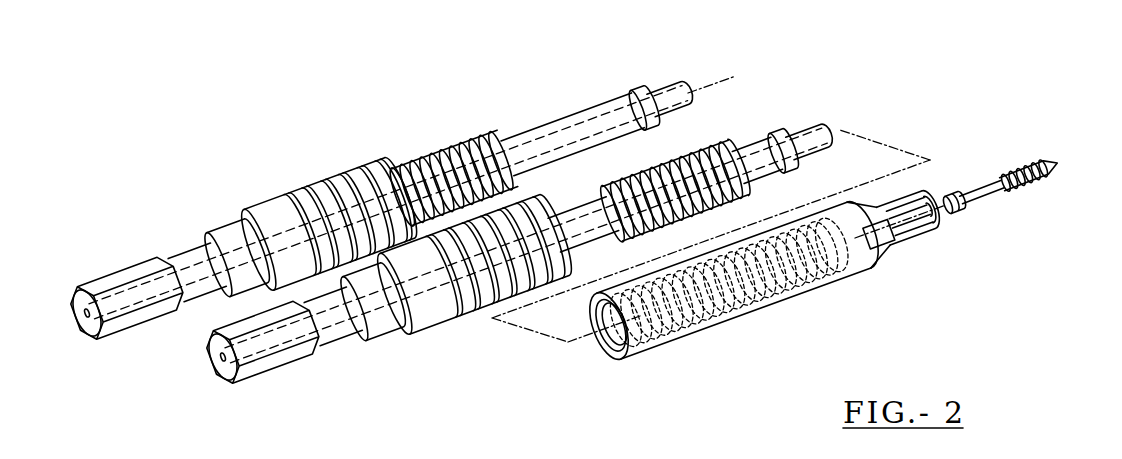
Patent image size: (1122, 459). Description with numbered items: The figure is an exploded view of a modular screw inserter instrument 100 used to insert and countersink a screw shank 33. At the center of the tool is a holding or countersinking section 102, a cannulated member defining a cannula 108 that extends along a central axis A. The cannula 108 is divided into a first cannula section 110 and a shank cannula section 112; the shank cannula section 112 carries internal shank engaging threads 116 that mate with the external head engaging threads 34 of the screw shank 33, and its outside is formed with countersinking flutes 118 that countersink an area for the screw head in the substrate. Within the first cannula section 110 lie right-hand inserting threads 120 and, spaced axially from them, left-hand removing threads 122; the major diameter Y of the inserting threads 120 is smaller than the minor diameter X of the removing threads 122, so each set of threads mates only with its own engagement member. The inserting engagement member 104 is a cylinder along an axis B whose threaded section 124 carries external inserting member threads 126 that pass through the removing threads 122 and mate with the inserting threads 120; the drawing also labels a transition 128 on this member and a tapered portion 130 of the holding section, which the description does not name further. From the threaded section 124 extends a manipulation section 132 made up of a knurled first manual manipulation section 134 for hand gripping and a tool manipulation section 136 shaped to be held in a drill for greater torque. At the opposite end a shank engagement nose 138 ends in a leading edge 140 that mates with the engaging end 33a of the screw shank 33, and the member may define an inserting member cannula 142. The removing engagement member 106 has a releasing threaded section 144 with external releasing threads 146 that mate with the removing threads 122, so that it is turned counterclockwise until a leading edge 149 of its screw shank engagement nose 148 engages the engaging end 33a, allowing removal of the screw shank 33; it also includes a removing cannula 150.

The modular screw inserter instrument 100 is at (345, 87).
The holding or countersinking section 102 is at (798, 326).
The inserting engagement member 104 is at (419, 359).
The removing engagement member 106 is at (321, 181).
The cannula 108 is at (731, 323).
The first cannula section 110 is at (684, 338).
The shank cannula section 112 is at (905, 238).
The shank engaging threads 116 is at (932, 219).
The countersinking flutes 118 is at (893, 200).
The inserting threads 120 is at (853, 284).
The removing threads 122 is at (609, 358).
The threaded section 124 is at (582, 183).
The inserting member threads 126 is at (648, 172).
The shoulder 128 is at (774, 139).
The tapered shoulder 130 is at (868, 270).
The manipulation section 132 is at (346, 355).
The first manual manipulation section 134 is at (467, 311).
The tool manipulation section 136 is at (270, 372).
The shank engagement nose 138 is at (788, 134).
The leading edge 140 is at (825, 130).
The inserting member cannula 142 is at (748, 149).
The releasing threaded section 144 is at (529, 88).
The releasing threads 146 is at (407, 160).
The screw shank engagement nose 148 is at (647, 90).
The leading edge 149 is at (690, 86).
The removing cannula 150 is at (124, 307).
The screw shank 33 is at (1022, 152).
The engaging end 33a is at (951, 213).
The head engaging threads 34 is at (951, 192).
The central axis A is at (568, 342).
The axis B is at (840, 130).
The minor diameter X is at (693, 262).
The major diameter Y is at (772, 214).